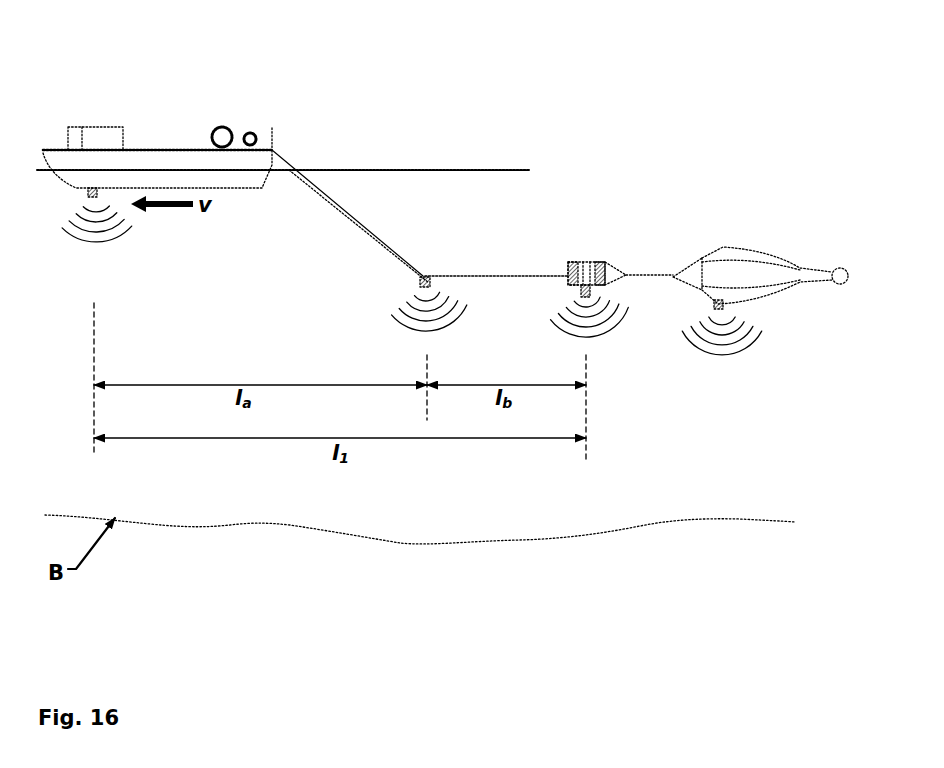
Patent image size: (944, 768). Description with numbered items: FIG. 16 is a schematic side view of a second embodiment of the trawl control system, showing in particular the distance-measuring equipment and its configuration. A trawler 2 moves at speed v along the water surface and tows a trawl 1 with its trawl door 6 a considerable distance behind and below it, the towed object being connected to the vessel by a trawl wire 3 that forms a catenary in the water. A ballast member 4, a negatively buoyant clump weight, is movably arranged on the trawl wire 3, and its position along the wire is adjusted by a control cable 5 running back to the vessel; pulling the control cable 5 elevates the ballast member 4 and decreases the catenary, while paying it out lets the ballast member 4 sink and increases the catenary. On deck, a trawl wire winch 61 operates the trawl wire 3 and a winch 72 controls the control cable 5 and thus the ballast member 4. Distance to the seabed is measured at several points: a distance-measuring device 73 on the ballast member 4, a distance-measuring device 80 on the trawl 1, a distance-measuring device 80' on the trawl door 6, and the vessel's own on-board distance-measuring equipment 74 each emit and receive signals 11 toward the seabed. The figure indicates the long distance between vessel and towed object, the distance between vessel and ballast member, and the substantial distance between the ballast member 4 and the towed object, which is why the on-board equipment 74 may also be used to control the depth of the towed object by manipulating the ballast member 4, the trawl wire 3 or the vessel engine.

The trawl 1 is at (741, 249).
The trawler 2 is at (117, 126).
The trawl wire 3 is at (322, 208).
The ballast member 4 is at (421, 277).
The control cable 5 is at (353, 213).
The trawl door 6 is at (579, 259).
The signals 11 is at (399, 280).
The trawl wire winch 61 is at (229, 125).
The winch 72 is at (254, 131).
The distance-measuring device 73 is at (418, 286).
The on-board distance-measuring equipment 74 is at (101, 197).
The distance-measuring device 80 is at (764, 315).
The distance-measuring device 80' is at (536, 298).